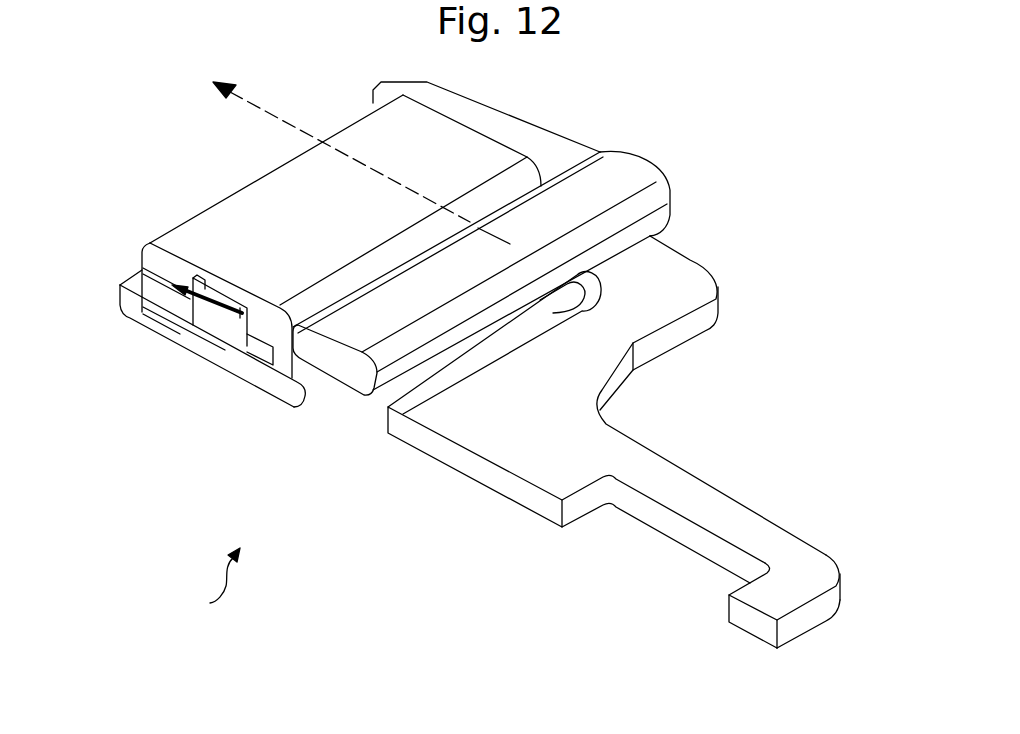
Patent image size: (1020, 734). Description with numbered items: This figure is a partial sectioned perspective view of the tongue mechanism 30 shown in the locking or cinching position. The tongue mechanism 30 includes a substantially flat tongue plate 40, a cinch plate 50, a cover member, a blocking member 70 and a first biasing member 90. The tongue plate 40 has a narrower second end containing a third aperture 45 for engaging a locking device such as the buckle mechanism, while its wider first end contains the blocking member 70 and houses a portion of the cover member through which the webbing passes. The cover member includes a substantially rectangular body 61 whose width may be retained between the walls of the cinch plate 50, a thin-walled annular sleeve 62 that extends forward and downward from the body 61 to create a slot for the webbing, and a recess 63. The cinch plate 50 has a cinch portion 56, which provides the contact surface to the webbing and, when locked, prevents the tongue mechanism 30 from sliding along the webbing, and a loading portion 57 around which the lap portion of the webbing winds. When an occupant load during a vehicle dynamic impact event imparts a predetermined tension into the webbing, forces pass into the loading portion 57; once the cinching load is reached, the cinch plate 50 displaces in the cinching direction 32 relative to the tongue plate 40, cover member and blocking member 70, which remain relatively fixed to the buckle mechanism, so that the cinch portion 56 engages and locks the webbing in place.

The tongue mechanism 30 is at (207, 584).
The cinching direction 32 is at (282, 120).
The tongue plate 40 is at (628, 452).
The third aperture 45 is at (647, 548).
The cinch plate 50 is at (617, 181).
The cinch portion 56 is at (333, 358).
The loading portion 57 is at (273, 385).
The body 61 is at (247, 207).
The sleeve 62 is at (388, 412).
The recess 63 is at (174, 285).
The blocking member 70 is at (213, 327).
The first biasing member 90 is at (220, 300).